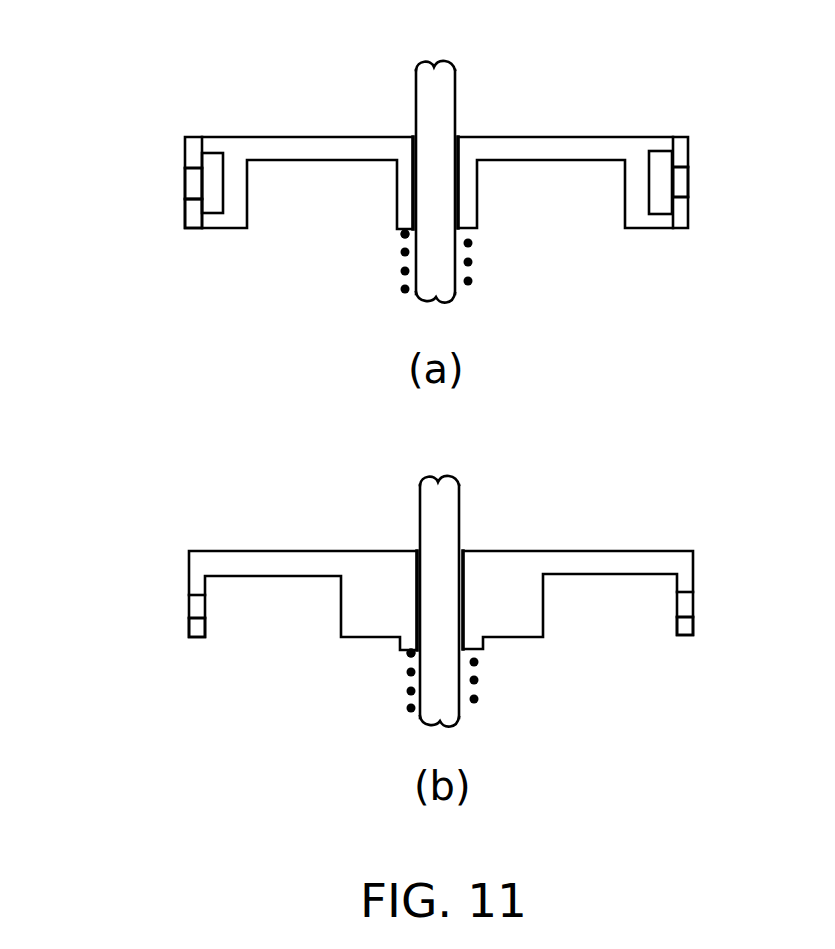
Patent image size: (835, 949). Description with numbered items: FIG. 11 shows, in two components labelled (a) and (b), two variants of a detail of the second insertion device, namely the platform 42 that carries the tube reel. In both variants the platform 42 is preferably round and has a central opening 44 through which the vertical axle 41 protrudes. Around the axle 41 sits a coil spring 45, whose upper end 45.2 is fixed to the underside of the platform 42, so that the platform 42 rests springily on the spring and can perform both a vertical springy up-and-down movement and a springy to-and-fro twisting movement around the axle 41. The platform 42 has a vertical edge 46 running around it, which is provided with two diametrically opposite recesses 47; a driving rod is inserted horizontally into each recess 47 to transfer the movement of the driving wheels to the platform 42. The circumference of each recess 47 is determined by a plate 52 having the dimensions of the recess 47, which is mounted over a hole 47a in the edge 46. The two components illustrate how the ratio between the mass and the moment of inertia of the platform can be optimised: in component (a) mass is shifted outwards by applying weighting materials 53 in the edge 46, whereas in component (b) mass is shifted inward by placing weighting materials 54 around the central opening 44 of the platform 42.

The axle 41 is at (441, 84).
The platform 42 is at (568, 148).
The central opening 44 is at (413, 136).
The coil spring 45 is at (472, 284).
The end of coil spring 45.2 is at (400, 234).
The vertical edge 46 is at (215, 222).
The recess 47 is at (193, 185).
The hole 47a is at (213, 160).
The plate 52 is at (193, 152).
The weighting materials 53 is at (235, 188).
The weighting materials 54 is at (358, 617).